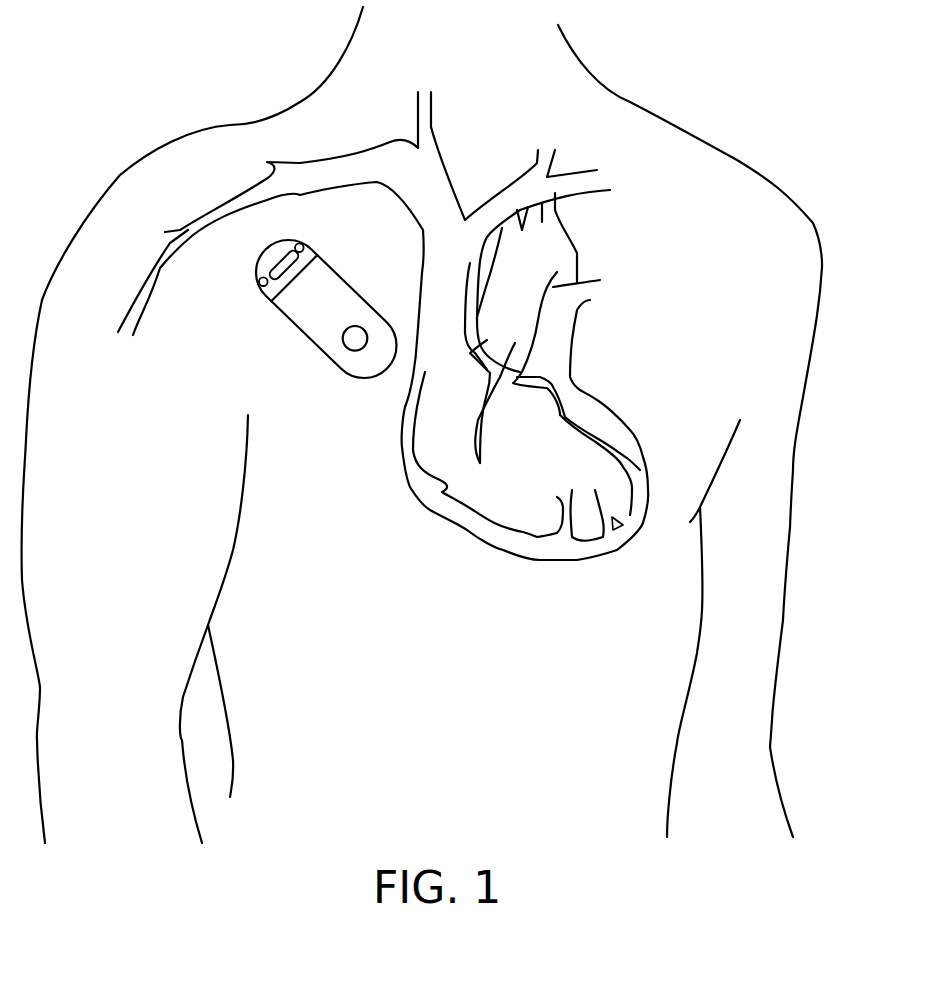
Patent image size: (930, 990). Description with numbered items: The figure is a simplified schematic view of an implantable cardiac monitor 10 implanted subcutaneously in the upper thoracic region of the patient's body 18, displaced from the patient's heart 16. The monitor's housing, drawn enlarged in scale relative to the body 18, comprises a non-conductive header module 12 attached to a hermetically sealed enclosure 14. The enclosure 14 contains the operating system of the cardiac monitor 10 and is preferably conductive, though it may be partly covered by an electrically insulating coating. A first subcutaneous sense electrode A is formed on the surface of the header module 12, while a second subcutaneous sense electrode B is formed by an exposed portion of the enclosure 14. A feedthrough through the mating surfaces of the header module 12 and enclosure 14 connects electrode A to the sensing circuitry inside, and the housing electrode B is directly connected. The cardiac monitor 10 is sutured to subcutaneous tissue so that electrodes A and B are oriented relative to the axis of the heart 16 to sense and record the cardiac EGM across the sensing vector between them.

The implantable cardiac monitor 10 is at (262, 221).
The header module 12 is at (317, 245).
The hermetically sealed enclosure 14 is at (280, 311).
The heart 16 is at (603, 430).
The patient's body 18 is at (343, 571).
The first sense electrode A is at (273, 268).
The second sense electrode B is at (365, 350).